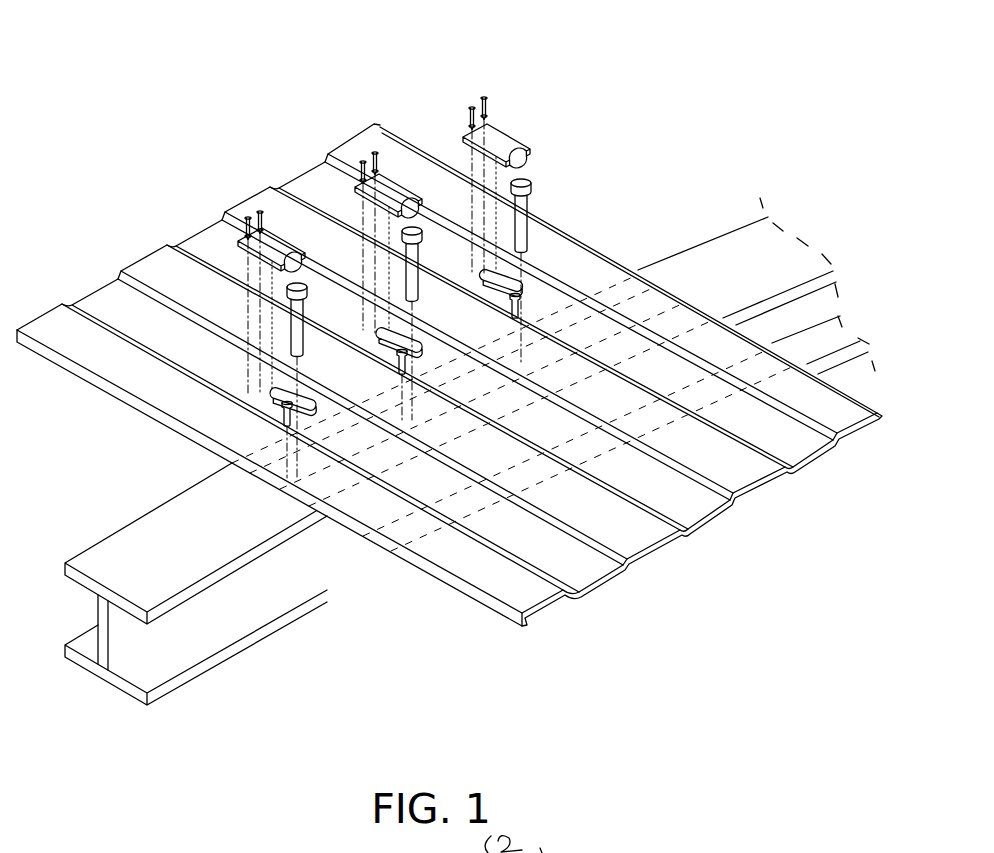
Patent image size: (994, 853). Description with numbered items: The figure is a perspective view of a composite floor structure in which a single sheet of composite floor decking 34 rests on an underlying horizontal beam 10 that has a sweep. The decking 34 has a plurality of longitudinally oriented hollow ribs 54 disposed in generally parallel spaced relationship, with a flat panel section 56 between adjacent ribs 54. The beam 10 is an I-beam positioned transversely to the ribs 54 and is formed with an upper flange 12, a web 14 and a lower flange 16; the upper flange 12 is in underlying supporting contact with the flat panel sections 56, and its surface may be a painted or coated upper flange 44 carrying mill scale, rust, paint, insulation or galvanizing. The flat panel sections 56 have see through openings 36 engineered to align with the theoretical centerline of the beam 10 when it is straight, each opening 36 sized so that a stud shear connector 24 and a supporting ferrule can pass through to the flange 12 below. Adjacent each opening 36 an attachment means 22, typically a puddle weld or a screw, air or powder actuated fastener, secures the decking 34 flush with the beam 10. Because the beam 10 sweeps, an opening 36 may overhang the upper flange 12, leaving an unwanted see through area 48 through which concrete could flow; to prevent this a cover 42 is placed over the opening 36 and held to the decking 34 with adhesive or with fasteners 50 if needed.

The horizontal beam 10 is at (181, 607).
The upper flange of beam 12 is at (63, 561).
The web of beam 14 is at (128, 640).
The lower flange of beam 16 is at (145, 695).
The attachment means 22 is at (272, 404).
The stud shear connector 24 is at (528, 200).
The composite floor decking 34 is at (474, 415).
The see through openings 36 is at (317, 417).
The cover 42 is at (507, 137).
The painted or coated upper flange of horizontal beam 44 is at (228, 522).
The unwanted see through area 48 is at (478, 272).
The fasteners to secure covers 50 is at (472, 120).
The longitudinally oriented hollow ribs 54 is at (543, 601).
The flat panel section 56 is at (602, 600).